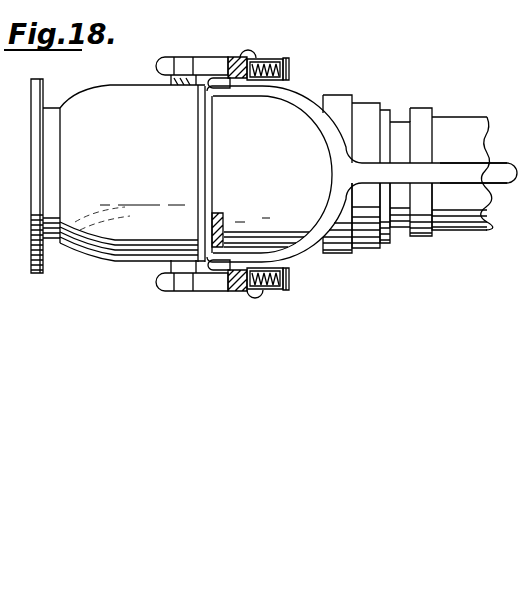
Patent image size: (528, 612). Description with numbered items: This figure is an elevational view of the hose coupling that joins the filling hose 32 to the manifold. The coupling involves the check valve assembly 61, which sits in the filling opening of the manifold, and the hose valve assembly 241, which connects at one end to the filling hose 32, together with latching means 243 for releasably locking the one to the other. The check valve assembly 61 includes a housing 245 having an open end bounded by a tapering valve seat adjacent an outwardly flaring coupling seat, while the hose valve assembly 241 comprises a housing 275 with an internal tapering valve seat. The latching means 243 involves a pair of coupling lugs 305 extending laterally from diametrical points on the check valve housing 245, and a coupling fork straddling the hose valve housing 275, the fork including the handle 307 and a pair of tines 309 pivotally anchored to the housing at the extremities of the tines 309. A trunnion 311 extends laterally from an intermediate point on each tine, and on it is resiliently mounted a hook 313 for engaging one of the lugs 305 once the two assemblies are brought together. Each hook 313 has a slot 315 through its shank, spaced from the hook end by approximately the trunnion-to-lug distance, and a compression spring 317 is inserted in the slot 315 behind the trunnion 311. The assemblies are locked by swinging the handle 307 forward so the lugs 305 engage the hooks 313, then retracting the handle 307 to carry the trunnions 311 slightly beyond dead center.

The check valve assembly 61 is at (140, 166).
The hose valve assembly 241 is at (282, 170).
The latching means 243 is at (351, 182).
The housing 245 is at (107, 258).
The housing 275 is at (302, 110).
The coupling lugs 305 is at (186, 57).
The handle 307 is at (467, 172).
The tines 309 is at (243, 89).
The trunnion 311 is at (259, 58).
The hook 313 is at (214, 58).
The slot 315 is at (265, 290).
The compression spring 317 is at (283, 291).
The filling hose 32 is at (458, 126).